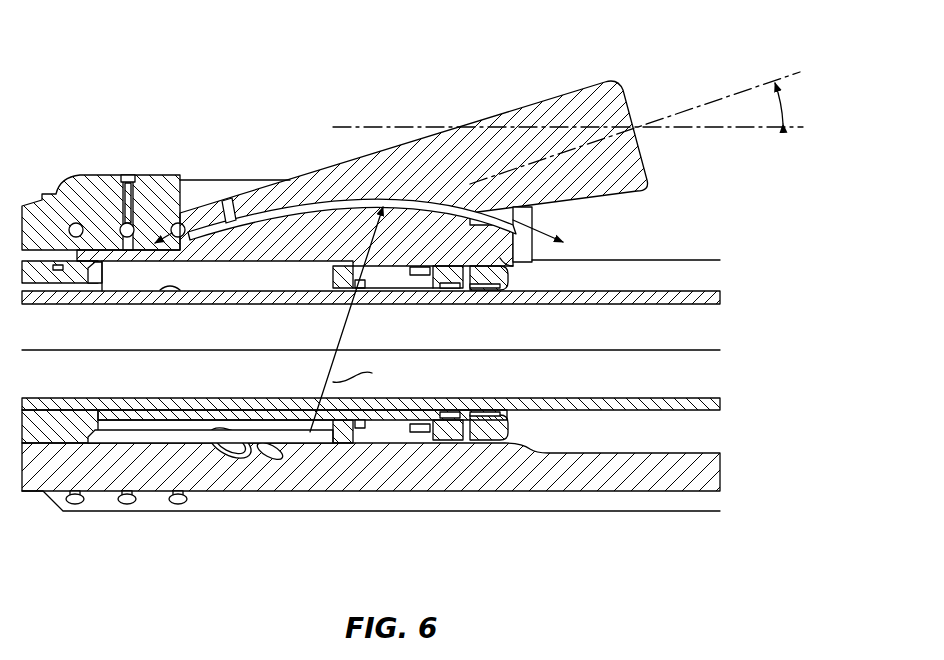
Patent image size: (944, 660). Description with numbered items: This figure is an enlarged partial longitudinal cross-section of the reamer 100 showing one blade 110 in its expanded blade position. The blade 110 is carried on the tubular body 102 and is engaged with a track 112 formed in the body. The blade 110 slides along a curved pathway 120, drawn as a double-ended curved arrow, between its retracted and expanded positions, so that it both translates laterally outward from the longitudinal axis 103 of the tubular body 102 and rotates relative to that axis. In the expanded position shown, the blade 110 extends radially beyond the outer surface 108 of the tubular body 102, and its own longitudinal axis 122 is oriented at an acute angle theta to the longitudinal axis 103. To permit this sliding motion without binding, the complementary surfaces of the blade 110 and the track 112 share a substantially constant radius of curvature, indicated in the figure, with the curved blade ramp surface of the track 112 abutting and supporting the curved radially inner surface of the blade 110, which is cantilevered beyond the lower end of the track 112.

The reamer 100 is at (100, 100).
The tubular body 102 is at (655, 475).
The longitudinal axis 103 is at (705, 350).
The outer surface 108 is at (208, 180).
The blade 110 is at (487, 137).
The track 112 is at (290, 232).
The curved pathway 120 is at (370, 197).
The longitudinal axis of blade 122 is at (665, 112).